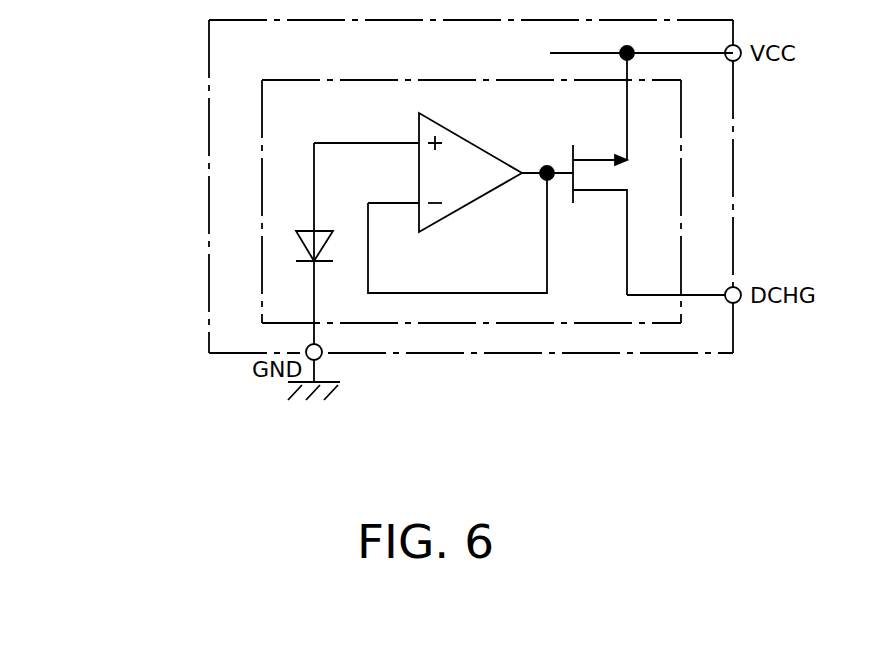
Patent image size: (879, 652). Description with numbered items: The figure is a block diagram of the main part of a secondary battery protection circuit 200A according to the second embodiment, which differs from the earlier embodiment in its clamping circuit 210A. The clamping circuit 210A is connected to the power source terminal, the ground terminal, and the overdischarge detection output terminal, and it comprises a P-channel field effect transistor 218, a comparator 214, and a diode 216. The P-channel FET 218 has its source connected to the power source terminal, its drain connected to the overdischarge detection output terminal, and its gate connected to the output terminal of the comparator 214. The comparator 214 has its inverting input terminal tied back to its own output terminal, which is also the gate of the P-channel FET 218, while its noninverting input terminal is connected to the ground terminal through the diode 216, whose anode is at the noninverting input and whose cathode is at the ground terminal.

The secondary battery protection circuit 200A is at (209, 177).
The clamping circuit 210A is at (380, 323).
The comparator 214 is at (472, 202).
The diode 216 is at (322, 228).
The P-channel field effect transistor 218 is at (588, 191).